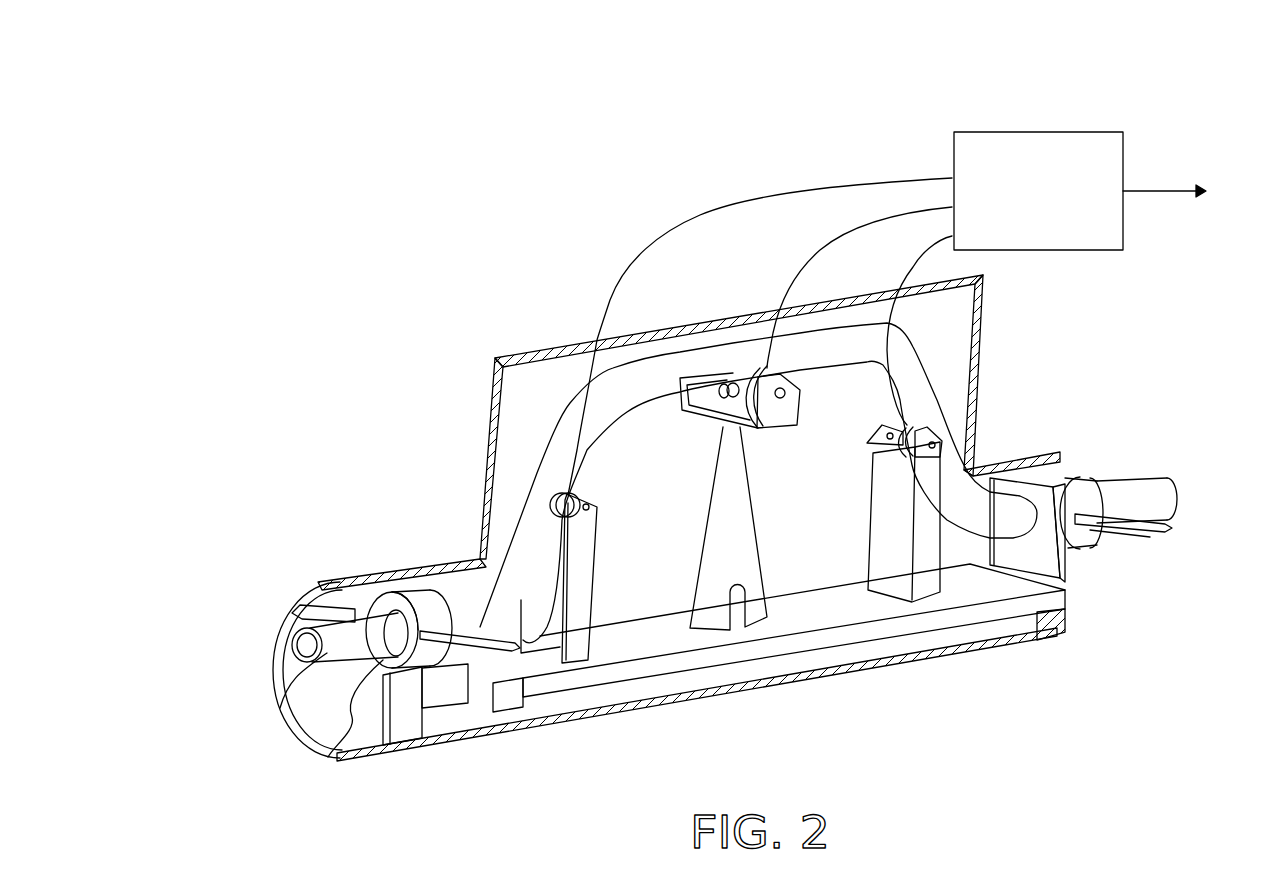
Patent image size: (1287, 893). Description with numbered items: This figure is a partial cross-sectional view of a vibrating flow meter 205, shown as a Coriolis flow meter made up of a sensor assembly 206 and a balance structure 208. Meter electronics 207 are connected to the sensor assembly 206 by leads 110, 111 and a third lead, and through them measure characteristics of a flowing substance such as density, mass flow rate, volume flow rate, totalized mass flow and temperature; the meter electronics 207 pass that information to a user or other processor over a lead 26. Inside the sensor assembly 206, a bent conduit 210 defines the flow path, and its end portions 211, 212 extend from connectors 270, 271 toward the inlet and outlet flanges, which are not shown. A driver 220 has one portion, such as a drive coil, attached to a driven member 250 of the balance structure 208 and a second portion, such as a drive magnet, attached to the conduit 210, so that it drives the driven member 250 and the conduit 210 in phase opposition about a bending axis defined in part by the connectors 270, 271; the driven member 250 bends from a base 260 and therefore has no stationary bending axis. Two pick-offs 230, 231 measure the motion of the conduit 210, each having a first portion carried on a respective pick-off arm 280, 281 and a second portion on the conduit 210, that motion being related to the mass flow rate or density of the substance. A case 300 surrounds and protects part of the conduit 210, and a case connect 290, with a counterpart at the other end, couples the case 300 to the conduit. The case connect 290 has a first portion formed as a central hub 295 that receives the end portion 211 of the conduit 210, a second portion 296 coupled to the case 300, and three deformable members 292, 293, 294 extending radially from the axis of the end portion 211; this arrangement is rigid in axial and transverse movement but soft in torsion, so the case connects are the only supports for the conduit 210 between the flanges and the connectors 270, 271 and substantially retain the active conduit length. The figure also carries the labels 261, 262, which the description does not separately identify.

The flow meter 205 is at (866, 92).
The sensor assembly 206 is at (515, 380).
The meter electronics 207 is at (1022, 132).
The lead 26 is at (1145, 190).
The lead 111 is at (725, 198).
The lead 110 is at (880, 218).
The conduit 210 is at (607, 407).
The driver 220 is at (700, 420).
The driven member 250 is at (735, 415).
The pick-off 230 is at (555, 485).
The pick-off 231 is at (868, 443).
The pick-off arm 280 is at (582, 580).
The pick-off arm 281 is at (890, 530).
The case 300 is at (453, 557).
The central hub 295 is at (400, 587).
The deformable member 294 is at (308, 610).
The end portion 211 is at (327, 652).
The case connect 290 is at (383, 662).
The second portion 296 is at (366, 750).
The deformable member 293 is at (400, 722).
The connector 270 is at (442, 675).
The base end block 261 is at (480, 697).
The deformable member 292 is at (503, 660).
The base 260 is at (633, 650).
The balance structure 208 is at (744, 670).
The base top surface 262 is at (960, 597).
The connector 271 is at (1043, 565).
The end portion 212 is at (1135, 487).